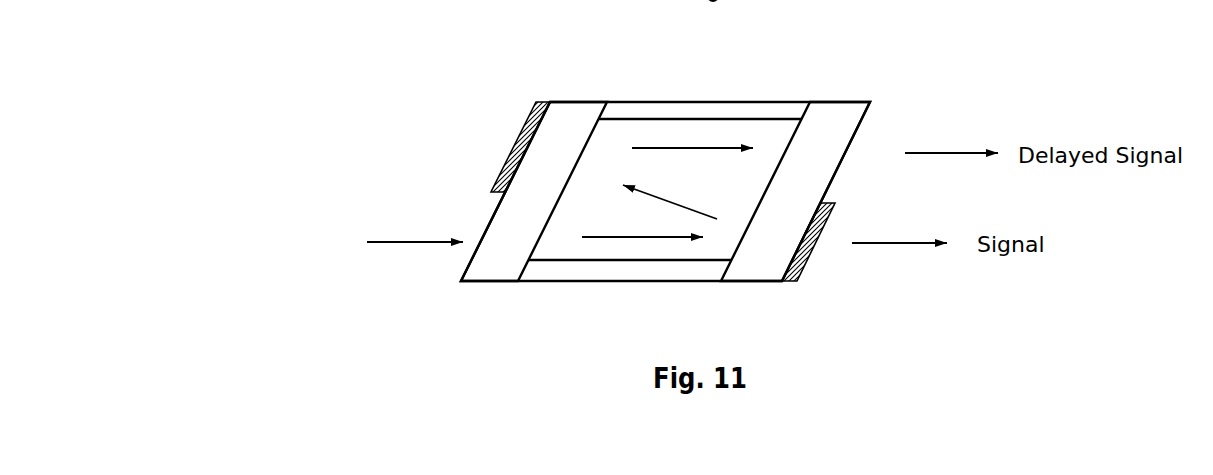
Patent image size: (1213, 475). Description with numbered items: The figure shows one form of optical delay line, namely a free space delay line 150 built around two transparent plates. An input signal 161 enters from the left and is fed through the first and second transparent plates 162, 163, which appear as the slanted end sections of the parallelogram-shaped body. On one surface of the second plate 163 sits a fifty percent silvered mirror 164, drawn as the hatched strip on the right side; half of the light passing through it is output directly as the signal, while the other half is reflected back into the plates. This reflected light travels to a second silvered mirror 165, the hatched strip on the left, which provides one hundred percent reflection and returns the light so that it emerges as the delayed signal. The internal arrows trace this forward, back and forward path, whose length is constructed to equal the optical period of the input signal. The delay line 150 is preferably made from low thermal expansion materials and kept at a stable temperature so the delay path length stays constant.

The free space delay line 150 is at (868, 80).
The input signal 161 is at (378, 265).
The first transparent plate 162 is at (482, 282).
The second transparent plate 163 is at (745, 282).
The 50% silvered mirror 164 is at (810, 263).
The second silvered mirror 165 is at (533, 101).